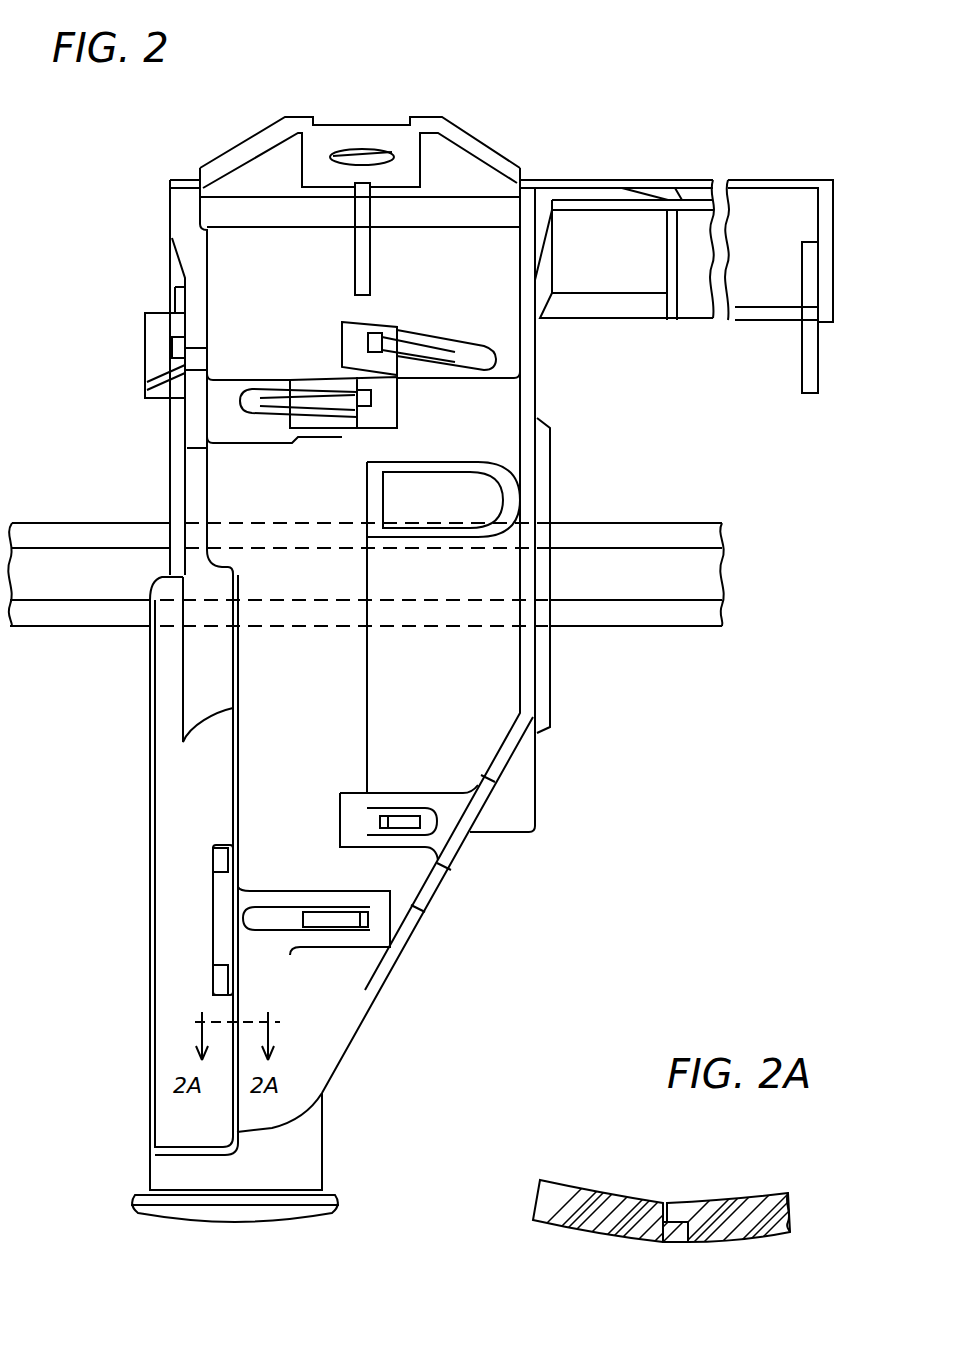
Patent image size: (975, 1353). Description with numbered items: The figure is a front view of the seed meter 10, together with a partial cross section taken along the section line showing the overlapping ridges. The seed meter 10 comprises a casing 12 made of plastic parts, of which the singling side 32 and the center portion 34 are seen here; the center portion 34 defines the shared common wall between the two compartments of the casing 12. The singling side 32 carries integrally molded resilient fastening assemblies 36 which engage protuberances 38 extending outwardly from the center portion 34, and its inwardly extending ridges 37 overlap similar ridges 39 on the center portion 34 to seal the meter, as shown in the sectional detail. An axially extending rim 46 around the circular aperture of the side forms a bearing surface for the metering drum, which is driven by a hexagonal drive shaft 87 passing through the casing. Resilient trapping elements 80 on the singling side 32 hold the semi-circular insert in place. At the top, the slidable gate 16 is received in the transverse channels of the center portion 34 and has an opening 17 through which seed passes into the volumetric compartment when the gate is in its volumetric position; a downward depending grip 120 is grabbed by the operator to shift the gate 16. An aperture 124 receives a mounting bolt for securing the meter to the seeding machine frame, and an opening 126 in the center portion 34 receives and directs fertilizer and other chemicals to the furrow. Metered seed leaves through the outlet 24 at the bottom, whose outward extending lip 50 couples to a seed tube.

In FIG. 2, the seed meter 10 is at (515, 81).
In FIG. 2, the casing 12 is at (455, 904).
In FIG. 2, the slidable gate 16 is at (700, 183).
In FIG. 2, the opening 17 is at (604, 228).
In FIG. 2, the outlet 24 is at (150, 1165).
In FIG. 2, the singling side 32 is at (150, 788).
In FIG. 2A, the singling side 32 is at (580, 1232).
In FIG. 2, the center portion 34 is at (300, 761).
In FIG. 2A, the center portion 34 is at (755, 1195).
In FIG. 2, the resilient fastening assemblies 36 is at (395, 402).
In FIG. 2A, the inwardly extending ridges 37 is at (672, 1232).
In FIG. 2, the protuberances 38 is at (340, 403).
In FIG. 2A, the ridges 39 is at (688, 1205).
In FIG. 2, the axially extending rim 46 is at (178, 459).
In FIG. 2, the outward extending lip 50 is at (133, 1203).
In FIG. 2, the resilient trapping elements 80 is at (150, 333).
In FIG. 2, the hexagonal drive shaft 87 is at (677, 628).
In FIG. 2, the downward depending grip 120 is at (802, 362).
In FIG. 2, the aperture 124 is at (358, 155).
In FIG. 2, the opening 126 is at (470, 502).